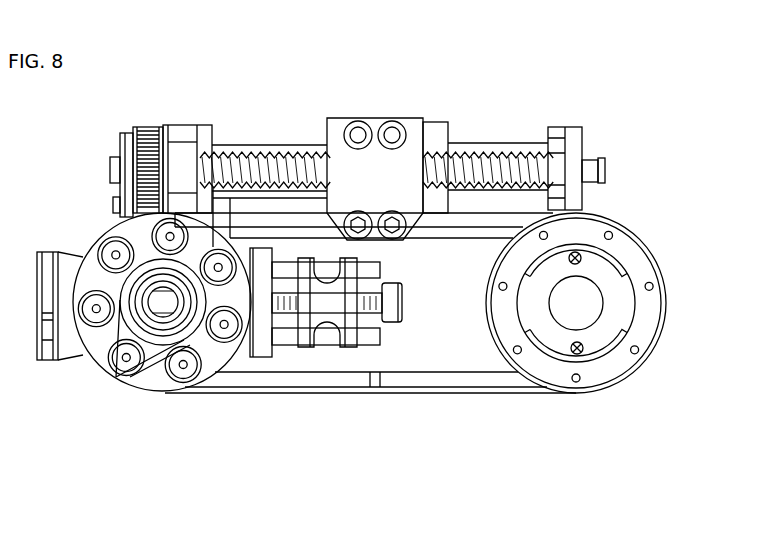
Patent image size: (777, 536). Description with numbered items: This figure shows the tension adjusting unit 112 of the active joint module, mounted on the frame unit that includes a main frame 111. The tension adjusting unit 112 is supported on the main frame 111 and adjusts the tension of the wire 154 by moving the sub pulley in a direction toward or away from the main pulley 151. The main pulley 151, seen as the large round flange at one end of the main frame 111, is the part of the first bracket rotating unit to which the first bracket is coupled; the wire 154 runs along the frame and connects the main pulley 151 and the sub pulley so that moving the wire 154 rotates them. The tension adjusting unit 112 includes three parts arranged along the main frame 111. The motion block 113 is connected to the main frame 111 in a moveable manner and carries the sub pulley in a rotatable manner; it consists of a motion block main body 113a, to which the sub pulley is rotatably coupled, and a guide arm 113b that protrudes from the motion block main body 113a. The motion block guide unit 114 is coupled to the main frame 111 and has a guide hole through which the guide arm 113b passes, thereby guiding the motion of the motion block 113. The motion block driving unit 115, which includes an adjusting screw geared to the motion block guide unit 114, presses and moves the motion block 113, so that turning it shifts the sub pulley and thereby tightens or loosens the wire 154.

The main frame 111 is at (447, 347).
The tension adjusting unit 112 is at (314, 384).
The motion block 113 is at (297, 364).
The motion block main body 113a is at (256, 347).
The guide arm 113b is at (287, 335).
The motion block guide unit 114 is at (348, 335).
The motion block driving unit 115 is at (392, 315).
The main pulley 151 is at (647, 307).
The wire 154 is at (503, 388).